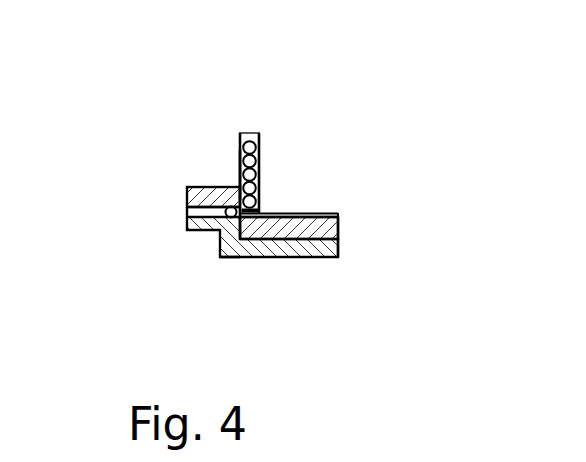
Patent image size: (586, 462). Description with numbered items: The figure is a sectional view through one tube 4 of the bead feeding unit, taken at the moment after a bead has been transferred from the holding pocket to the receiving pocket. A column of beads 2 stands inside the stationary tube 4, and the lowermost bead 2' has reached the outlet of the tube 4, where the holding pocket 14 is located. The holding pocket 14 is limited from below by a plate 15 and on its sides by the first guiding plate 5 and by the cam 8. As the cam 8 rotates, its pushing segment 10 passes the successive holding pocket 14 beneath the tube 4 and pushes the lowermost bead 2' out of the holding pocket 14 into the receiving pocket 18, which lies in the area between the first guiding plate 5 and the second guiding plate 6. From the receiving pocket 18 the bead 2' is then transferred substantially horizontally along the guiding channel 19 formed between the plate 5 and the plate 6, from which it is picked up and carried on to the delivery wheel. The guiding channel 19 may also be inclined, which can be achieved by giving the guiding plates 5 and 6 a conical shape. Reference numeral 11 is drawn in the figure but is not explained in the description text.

The beads 2 is at (292, 136).
The lowermost bead 2' is at (191, 130).
The tube 4 is at (242, 132).
The first guiding plate 5 is at (188, 188).
The second guiding plate 6 is at (212, 213).
The cam 8 is at (313, 212).
The pushing segment 10 is at (259, 205).
The foil strip 11 is at (261, 213).
The holding pocket 14 is at (264, 226).
The plate 15 is at (330, 223).
The receiving pocket 18 is at (237, 236).
The guiding channel 19 is at (208, 226).